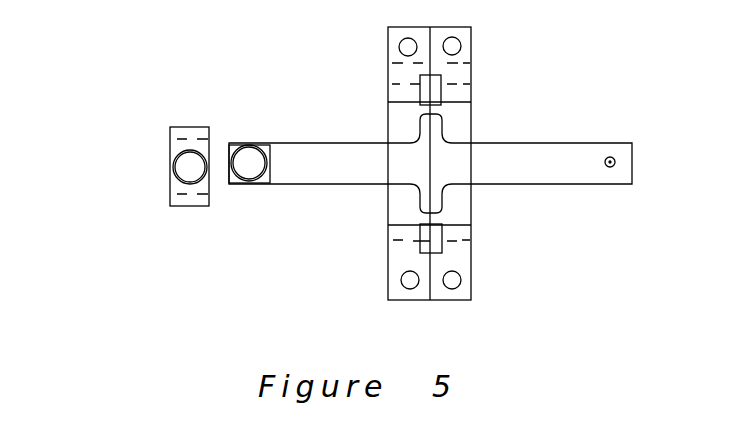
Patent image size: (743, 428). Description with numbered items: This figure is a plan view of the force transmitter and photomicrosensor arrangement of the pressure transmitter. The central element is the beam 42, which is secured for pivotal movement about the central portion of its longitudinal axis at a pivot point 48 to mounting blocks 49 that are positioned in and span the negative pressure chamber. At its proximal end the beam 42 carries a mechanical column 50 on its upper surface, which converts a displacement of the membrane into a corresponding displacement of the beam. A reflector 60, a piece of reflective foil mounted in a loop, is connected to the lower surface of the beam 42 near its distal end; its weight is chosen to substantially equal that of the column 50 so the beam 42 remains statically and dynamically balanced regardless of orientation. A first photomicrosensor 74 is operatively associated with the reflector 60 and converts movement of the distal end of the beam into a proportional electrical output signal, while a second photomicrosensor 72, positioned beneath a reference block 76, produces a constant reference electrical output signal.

The beam 42 is at (560, 174).
The pivot point 48 is at (432, 106).
The mounting blocks 49 is at (387, 52).
The mechanical column 50 is at (610, 157).
The reflector 60 is at (272, 168).
The second photomicrosensor 72 is at (252, 158).
The first photomicrosensor 74 is at (176, 168).
The reference block 76 is at (188, 205).